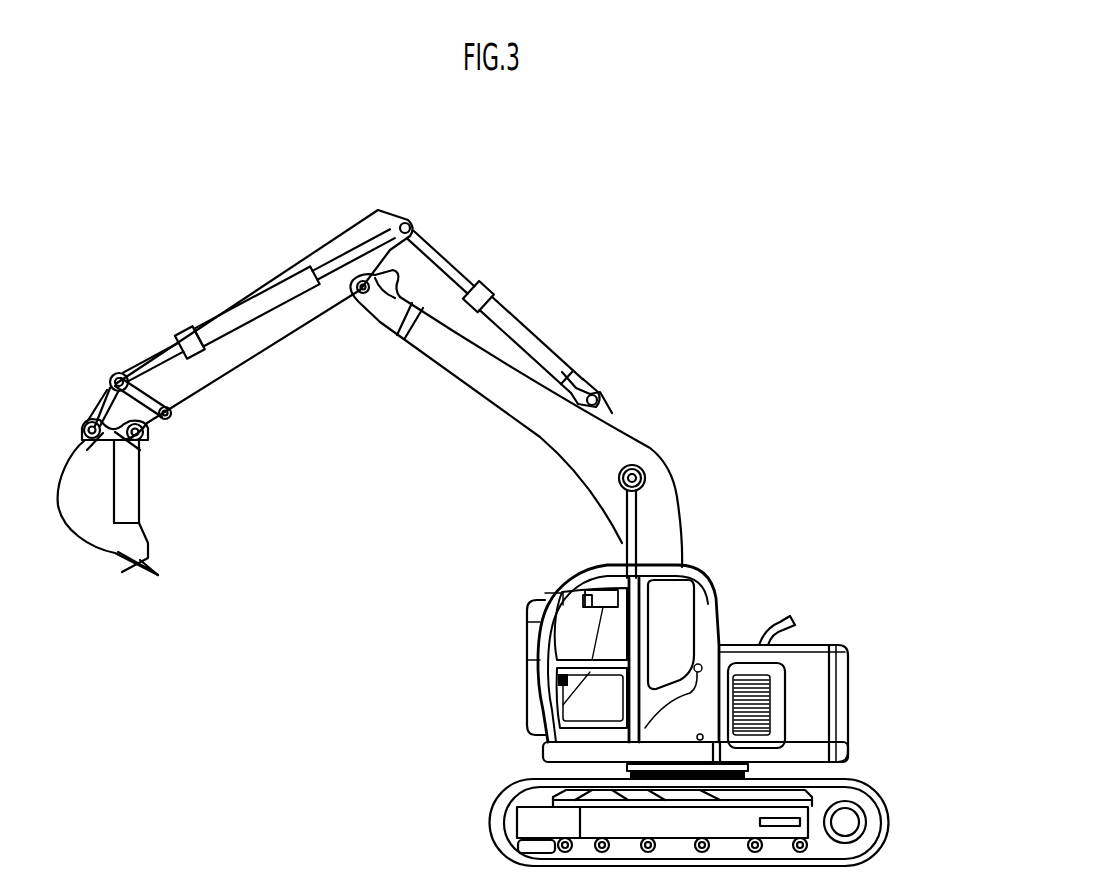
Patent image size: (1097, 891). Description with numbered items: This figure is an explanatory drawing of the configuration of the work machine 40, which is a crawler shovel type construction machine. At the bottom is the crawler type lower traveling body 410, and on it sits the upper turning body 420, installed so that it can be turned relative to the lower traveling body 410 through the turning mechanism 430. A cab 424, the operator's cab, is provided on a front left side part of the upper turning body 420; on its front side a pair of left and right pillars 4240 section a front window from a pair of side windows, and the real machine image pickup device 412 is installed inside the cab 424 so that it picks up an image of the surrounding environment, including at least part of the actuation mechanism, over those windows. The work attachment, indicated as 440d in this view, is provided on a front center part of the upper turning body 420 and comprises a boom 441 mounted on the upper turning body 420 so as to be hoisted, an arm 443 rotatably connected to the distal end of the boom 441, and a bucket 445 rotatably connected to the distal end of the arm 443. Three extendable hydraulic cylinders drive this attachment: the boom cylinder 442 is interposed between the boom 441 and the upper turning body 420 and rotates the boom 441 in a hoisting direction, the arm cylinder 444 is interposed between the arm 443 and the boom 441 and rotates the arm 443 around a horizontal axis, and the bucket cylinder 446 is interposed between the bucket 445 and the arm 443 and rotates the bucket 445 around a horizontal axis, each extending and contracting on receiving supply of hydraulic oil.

The work machine 40 is at (713, 193).
The lower traveling body 410 is at (510, 780).
The real machine image pickup device 412 is at (602, 593).
The upper turning body 420 is at (855, 677).
The cab 424 is at (718, 560).
The pillars 4240 is at (563, 590).
The turning mechanism 430 is at (765, 772).
The front work implement 440d is at (511, 255).
The boom 441 is at (663, 498).
The boom cylinder 442 is at (622, 543).
The arm 443 is at (262, 353).
The arm cylinder 444 is at (527, 327).
The bucket 445 is at (92, 527).
The bucket cylinder 446 is at (250, 287).